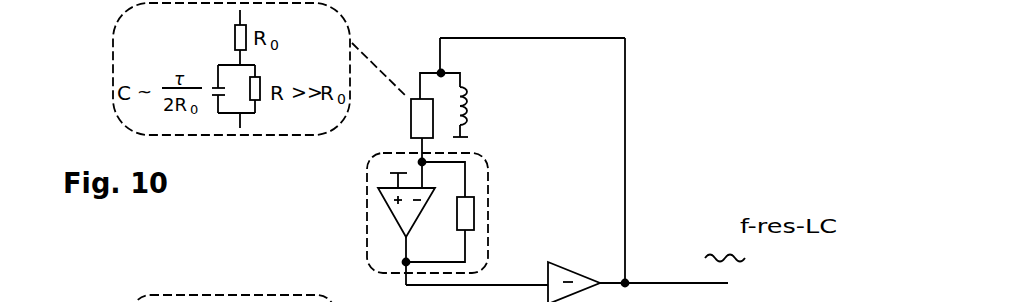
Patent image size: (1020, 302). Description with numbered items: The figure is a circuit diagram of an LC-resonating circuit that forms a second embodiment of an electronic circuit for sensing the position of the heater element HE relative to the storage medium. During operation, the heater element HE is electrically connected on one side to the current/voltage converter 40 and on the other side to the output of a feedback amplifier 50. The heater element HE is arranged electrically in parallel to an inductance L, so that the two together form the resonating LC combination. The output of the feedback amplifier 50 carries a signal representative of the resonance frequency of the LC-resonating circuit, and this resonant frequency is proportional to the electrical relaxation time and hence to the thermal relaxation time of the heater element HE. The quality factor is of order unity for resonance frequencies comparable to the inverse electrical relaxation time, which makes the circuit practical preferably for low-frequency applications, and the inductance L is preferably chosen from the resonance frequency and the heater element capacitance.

The current/voltage converter 40 is at (478, 188).
The feedback amplifier 50 is at (580, 273).
The heater element HE is at (404, 117).
The inductance L is at (467, 105).